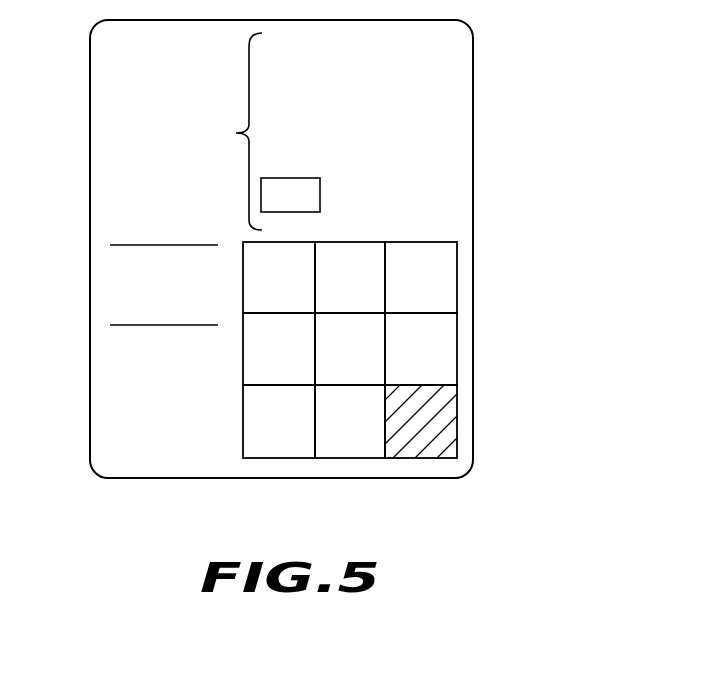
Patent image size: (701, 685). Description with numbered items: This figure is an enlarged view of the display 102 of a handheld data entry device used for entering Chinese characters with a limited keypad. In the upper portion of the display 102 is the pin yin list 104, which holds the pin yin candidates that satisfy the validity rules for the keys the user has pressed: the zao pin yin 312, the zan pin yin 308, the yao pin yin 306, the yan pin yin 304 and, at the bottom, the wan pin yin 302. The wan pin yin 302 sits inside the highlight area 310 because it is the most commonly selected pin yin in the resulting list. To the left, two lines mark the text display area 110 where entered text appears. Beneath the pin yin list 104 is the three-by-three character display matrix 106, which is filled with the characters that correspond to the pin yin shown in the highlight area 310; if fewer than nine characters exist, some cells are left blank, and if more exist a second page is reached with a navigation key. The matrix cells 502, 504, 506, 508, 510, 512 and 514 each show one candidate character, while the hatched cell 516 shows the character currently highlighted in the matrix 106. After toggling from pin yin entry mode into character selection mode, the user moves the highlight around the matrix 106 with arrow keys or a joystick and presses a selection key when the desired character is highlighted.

The display 102 is at (472, 78).
The pin yin list 104 is at (281, 136).
The 3×3 character display matrix 106 is at (452, 230).
The text display area 110 is at (91, 229).
The wan pin yin 302 is at (301, 197).
The yan pin yin 304 is at (303, 161).
The yao pin yin 306 is at (303, 123).
The zan pin yin 308 is at (303, 85).
The highlight area 310 is at (305, 212).
The zao pin yin 312 is at (303, 47).
The character candidate cell 502 is at (255, 270).
The character candidate cell 504 is at (397, 270).
The character candidate cell 506 is at (255, 341).
The character candidate cell 508 is at (326, 341).
The character candidate cell 510 is at (397, 341).
The character candidate cell 512 is at (255, 413).
The character candidate cell 514 is at (326, 413).
The selected character cell (highlighted) 516 is at (397, 413).